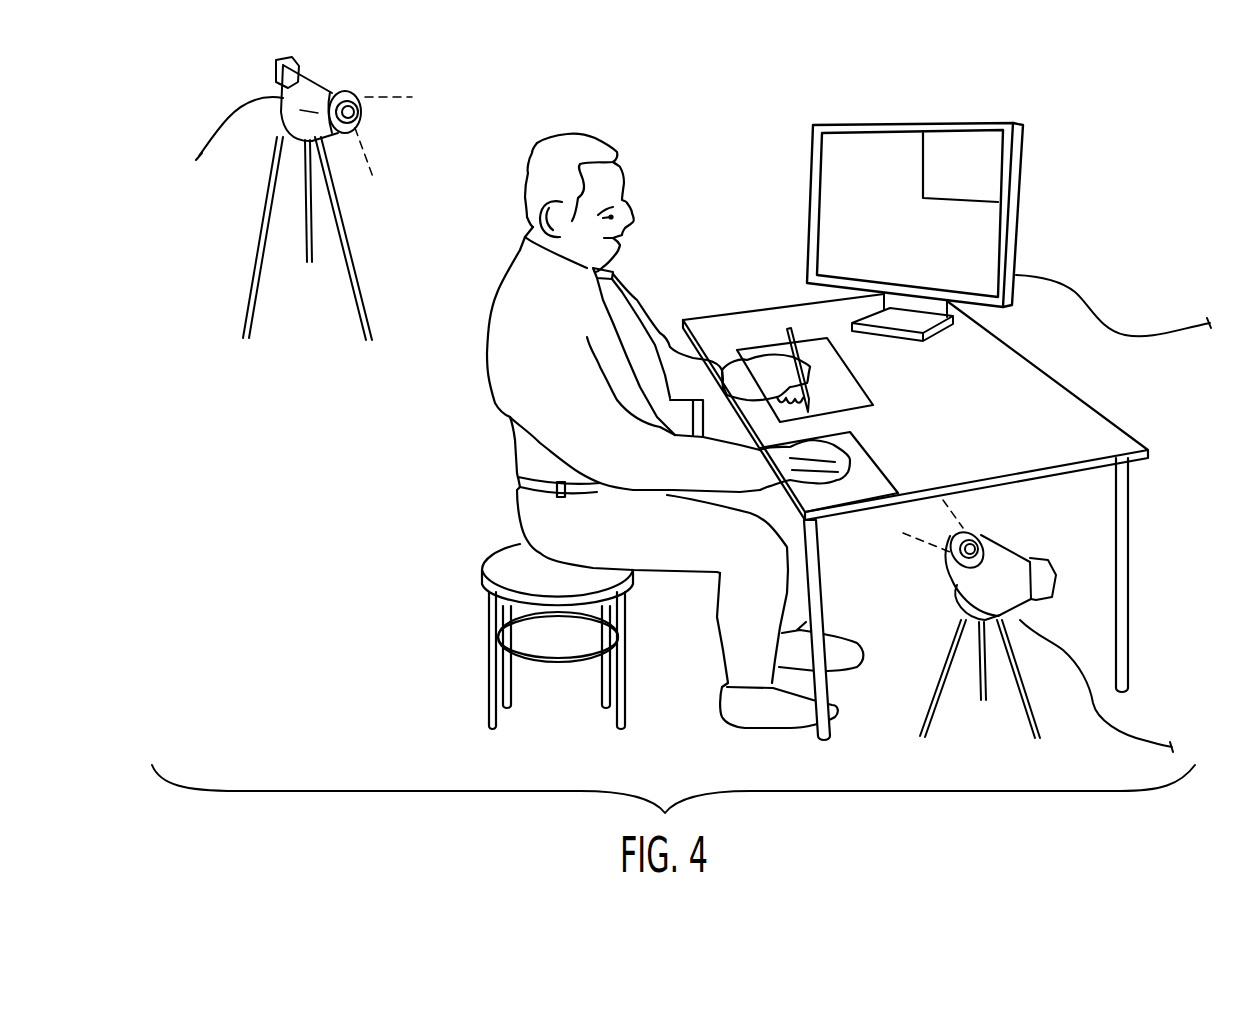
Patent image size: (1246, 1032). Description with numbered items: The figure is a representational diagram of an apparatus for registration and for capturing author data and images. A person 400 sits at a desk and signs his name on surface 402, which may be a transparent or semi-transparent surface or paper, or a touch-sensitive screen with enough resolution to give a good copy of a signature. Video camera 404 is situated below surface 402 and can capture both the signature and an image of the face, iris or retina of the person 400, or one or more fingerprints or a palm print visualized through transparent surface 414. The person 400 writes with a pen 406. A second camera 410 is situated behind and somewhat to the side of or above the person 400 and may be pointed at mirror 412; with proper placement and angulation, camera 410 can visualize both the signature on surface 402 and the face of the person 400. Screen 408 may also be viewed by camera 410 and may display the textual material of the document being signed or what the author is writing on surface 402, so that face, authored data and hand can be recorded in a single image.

The person 400 is at (557, 352).
The signing surface 402 is at (847, 393).
The video camera 404 is at (1020, 570).
The pen 406 is at (785, 328).
The screen 408 is at (978, 257).
The camera 410 is at (278, 117).
The mirror 412 is at (990, 172).
The transparent surface 414 is at (862, 484).